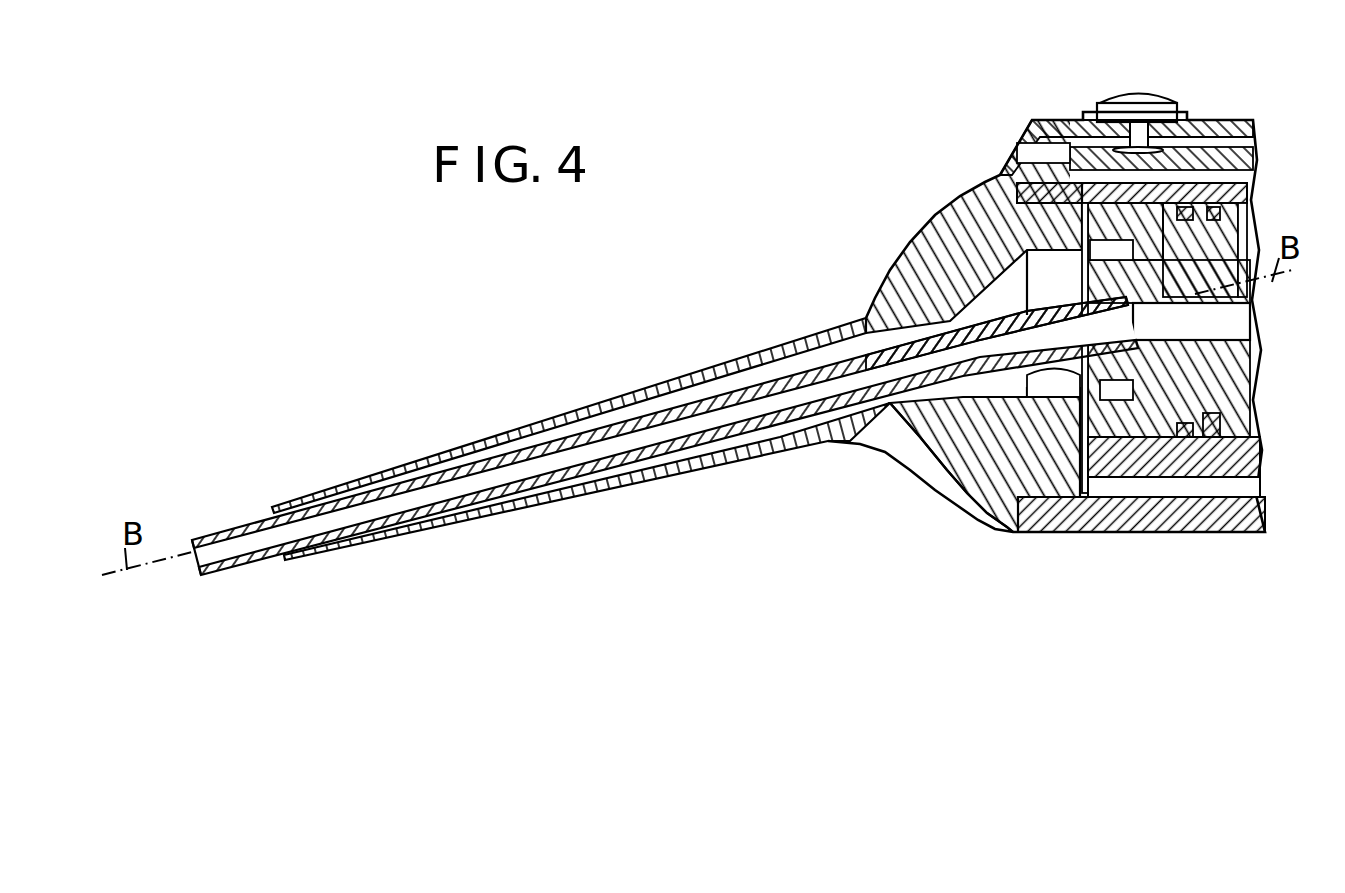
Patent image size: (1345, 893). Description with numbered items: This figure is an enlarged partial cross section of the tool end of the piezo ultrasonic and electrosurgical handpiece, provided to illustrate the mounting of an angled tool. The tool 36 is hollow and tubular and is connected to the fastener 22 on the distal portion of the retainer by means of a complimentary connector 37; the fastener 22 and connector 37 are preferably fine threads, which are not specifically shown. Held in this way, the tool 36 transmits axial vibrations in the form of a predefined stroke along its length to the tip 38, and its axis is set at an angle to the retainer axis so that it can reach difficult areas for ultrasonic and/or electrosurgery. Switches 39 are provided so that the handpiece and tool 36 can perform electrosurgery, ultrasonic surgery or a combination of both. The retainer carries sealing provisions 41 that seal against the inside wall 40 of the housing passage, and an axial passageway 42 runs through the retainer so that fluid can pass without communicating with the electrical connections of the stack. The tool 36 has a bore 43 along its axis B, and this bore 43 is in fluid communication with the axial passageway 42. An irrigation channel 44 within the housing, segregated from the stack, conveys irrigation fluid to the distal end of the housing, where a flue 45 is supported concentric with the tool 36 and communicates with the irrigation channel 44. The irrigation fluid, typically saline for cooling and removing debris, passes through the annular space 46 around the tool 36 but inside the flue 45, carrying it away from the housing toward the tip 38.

The fastener 22 is at (1077, 293).
The tool 36 is at (940, 290).
The complimentary connector 37 is at (1113, 370).
The tip 38 is at (207, 540).
The switches 39 is at (1138, 92).
The inside wall 40 is at (1228, 490).
The sealing provisions 41 is at (1207, 428).
The axial passageway 42 is at (1258, 325).
The bore 43 is at (910, 372).
The irrigation channel 44 is at (1145, 487).
The flue 45 is at (420, 458).
The annular space 46 is at (888, 447).